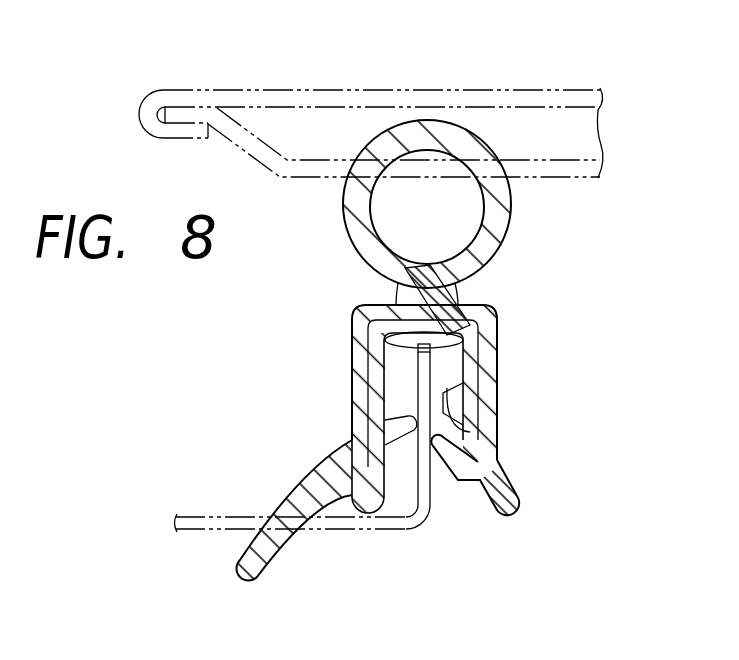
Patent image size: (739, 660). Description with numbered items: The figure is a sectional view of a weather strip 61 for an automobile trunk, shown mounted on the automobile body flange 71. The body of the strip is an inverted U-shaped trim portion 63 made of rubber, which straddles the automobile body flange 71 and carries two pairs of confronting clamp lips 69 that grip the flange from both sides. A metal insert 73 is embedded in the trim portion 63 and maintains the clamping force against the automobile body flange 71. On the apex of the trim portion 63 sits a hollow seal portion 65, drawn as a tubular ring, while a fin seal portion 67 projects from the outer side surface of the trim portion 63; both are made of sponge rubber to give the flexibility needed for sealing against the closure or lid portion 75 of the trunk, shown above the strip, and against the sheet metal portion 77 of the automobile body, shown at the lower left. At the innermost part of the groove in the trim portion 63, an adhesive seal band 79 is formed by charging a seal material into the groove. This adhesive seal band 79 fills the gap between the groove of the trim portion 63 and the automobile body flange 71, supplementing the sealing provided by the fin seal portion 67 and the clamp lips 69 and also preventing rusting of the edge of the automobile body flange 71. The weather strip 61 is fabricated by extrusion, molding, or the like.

The weather strip 61 is at (352, 381).
The inverted U-shaped trim portion 63 is at (353, 328).
The hollow seal portion 65 is at (510, 213).
The fin seal portion 67 is at (293, 487).
The clamp lips 69 is at (497, 442).
The automobile body flange 71 is at (430, 507).
The metal insert 73 is at (497, 345).
The closure or lid portion 75 is at (553, 86).
The sheet metal portion 77 is at (199, 512).
The adhesive seal band 79 is at (447, 332).